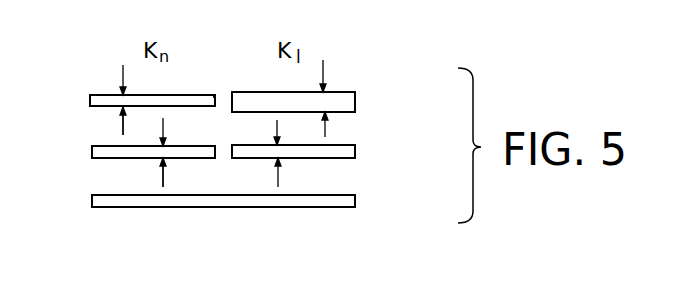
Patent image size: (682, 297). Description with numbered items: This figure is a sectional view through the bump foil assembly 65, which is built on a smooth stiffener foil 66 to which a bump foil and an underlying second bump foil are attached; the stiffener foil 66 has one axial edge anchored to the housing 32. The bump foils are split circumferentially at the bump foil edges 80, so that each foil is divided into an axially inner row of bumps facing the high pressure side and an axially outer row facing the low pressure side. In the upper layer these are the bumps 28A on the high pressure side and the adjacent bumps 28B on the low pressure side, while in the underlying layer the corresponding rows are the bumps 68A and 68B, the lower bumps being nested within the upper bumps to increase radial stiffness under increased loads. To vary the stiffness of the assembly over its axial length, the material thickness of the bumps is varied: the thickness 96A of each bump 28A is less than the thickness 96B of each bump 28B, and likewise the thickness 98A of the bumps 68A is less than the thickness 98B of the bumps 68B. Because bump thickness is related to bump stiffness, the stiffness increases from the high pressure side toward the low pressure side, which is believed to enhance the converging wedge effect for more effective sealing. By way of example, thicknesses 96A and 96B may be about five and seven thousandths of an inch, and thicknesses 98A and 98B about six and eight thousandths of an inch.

The axially inner row of bumps 28A is at (104, 93).
The axially outer row of bumps 28B is at (355, 98).
The axially inner row of bumps 68A is at (92, 152).
The axially outer row of bumps 68B is at (357, 150).
The smooth stiffener foil 66 is at (162, 208).
The bump foil edges 80 is at (216, 97).
The bump thickness 96A is at (123, 132).
The bump thickness 96B is at (323, 68).
The bump thickness 98A is at (163, 183).
The bump thickness 98B is at (278, 183).
The bump foil assembly 65 is at (377, 61).
The housing 32 is at (594, 4).